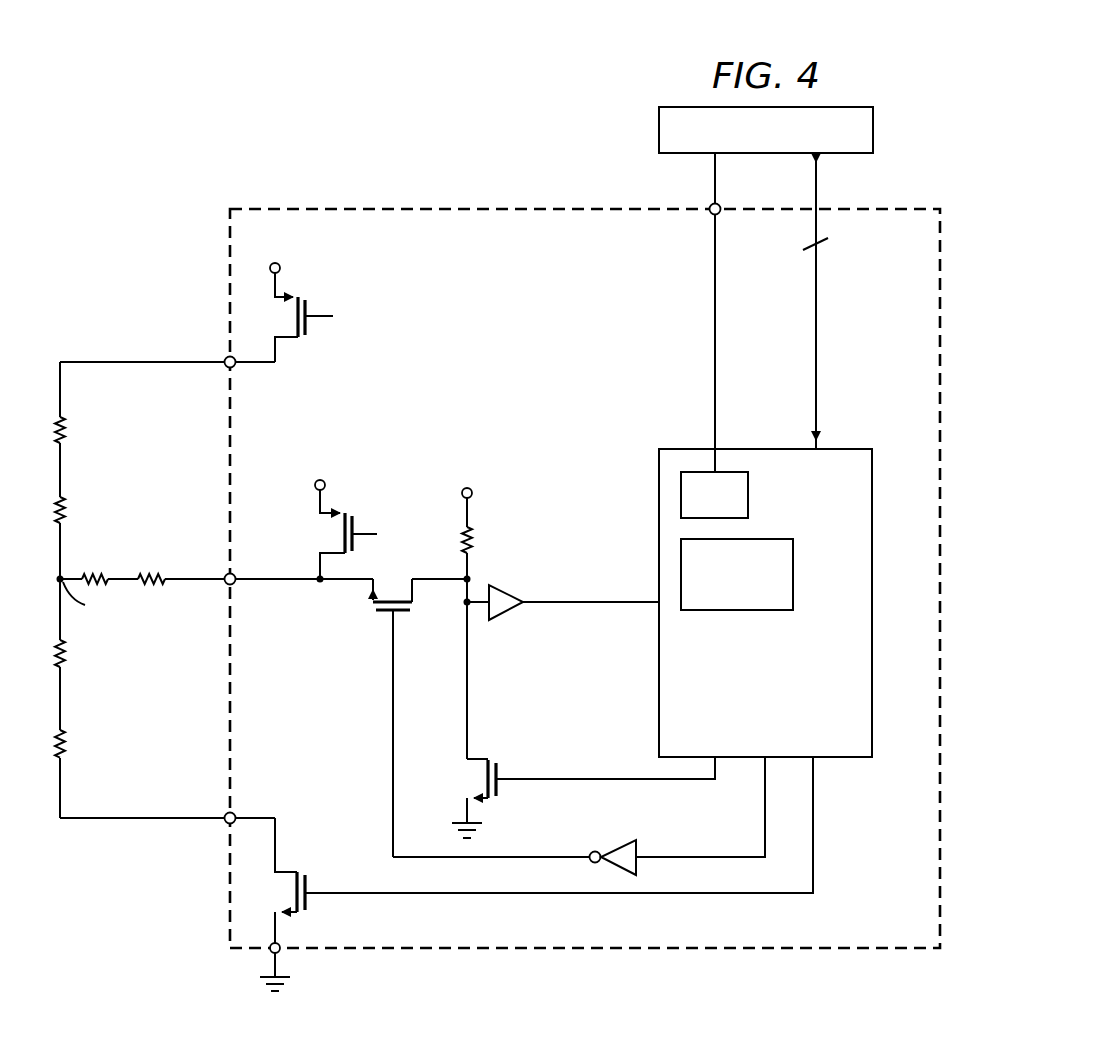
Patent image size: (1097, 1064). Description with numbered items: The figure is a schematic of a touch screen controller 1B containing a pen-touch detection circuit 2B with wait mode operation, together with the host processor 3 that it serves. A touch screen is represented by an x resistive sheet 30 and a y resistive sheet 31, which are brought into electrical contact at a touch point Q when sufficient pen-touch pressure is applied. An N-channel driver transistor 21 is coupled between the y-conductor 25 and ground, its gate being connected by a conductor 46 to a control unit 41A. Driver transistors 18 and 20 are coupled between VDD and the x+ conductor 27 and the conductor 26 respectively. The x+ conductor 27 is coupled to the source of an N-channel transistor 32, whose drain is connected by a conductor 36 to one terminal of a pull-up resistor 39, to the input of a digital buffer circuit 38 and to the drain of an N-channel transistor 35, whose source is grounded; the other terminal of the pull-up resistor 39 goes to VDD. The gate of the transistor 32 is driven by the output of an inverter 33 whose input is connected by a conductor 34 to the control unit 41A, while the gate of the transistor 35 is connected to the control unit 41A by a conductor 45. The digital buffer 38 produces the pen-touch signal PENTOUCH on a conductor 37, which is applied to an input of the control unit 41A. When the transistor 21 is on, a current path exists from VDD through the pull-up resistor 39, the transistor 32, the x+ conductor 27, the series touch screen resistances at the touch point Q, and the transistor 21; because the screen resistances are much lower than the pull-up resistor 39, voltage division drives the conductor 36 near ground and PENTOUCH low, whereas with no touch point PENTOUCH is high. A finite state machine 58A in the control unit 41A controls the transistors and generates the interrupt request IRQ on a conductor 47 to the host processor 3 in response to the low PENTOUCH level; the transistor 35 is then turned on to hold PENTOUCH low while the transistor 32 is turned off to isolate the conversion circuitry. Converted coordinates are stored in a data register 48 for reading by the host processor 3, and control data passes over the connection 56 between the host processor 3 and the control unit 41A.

The touch screen controller 1B is at (550, 474).
The pen-touch detection circuit 2B is at (227, 876).
The host processor 3 is at (873, 135).
The conductor 47 is at (714, 170).
The control data bus 56 is at (817, 190).
The control unit 41A is at (772, 631).
The finite state machine 58A is at (748, 497).
The data register 48 is at (794, 583).
The x resistive sheet 30 is at (142, 550).
The y resistive sheet 31 is at (120, 345).
The conductor 26 is at (247, 366).
The driver transistor 20 is at (309, 303).
The x+ conductor 27 is at (284, 584).
The driver transistor 18 is at (355, 521).
The N-channel transistor 32 is at (381, 619).
The conductor 36 is at (447, 577).
The pull-up resistor 39 is at (471, 537).
The digital buffer circuit 38 is at (508, 612).
The conductor 37 is at (584, 605).
The N-channel transistor 35 is at (499, 790).
The conductor 45 is at (648, 780).
The inverter 33 is at (598, 838).
The conductor 34 is at (706, 856).
The conductor 46 is at (814, 836).
The y-conductor 25 is at (254, 818).
The N-channel driver transistor 21 is at (307, 899).